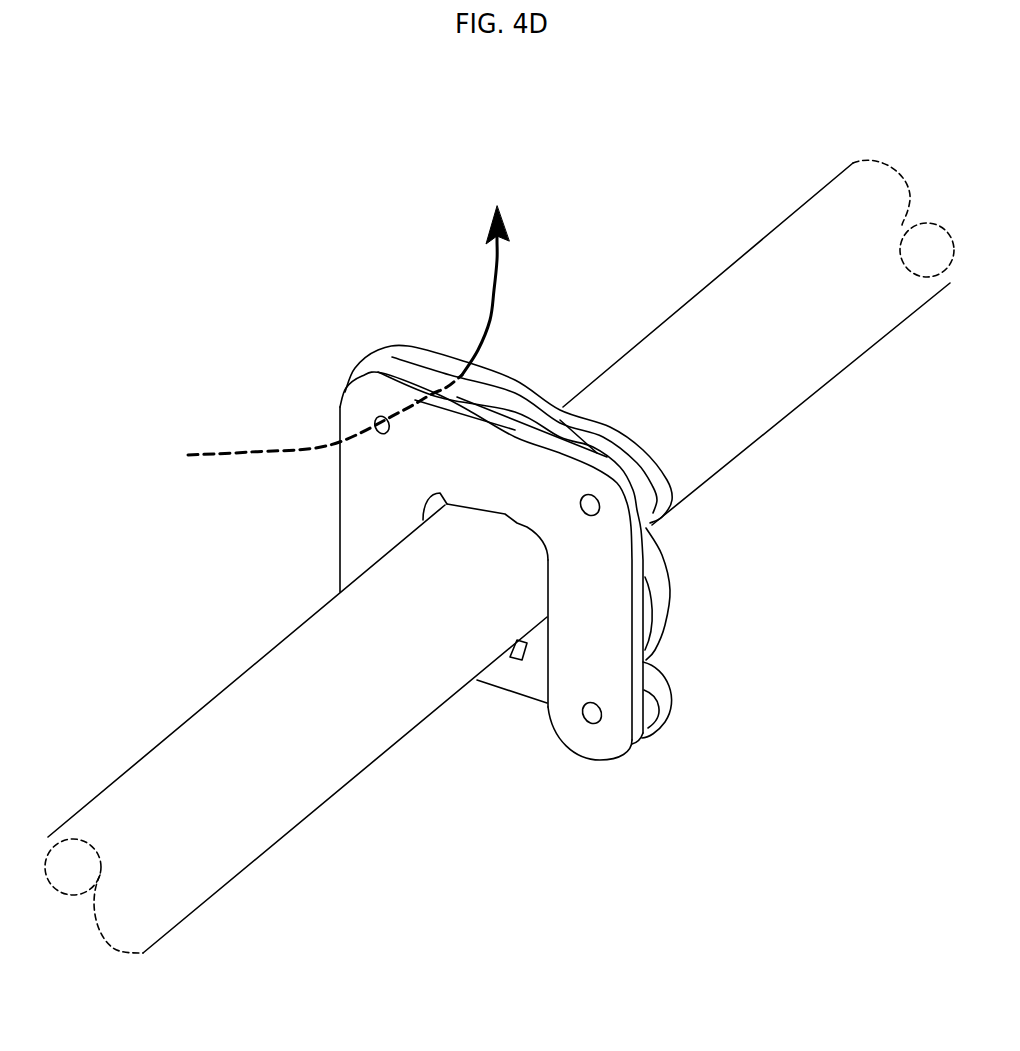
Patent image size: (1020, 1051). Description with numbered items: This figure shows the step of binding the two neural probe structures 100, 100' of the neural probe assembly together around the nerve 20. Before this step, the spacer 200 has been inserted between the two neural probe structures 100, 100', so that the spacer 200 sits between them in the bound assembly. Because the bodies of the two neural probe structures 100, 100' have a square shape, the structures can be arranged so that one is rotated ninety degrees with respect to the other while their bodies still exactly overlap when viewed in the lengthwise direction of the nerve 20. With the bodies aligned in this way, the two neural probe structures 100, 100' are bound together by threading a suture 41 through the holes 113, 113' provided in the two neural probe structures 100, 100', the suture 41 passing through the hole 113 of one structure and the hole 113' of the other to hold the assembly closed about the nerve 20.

The nerve 20 is at (778, 253).
The suture 41 is at (502, 262).
The neural probe structure 100 is at (508, 509).
The neural probe structure 100' is at (432, 566).
The hole 113 is at (423, 302).
The hole 113' is at (314, 398).
The spacer 200 is at (658, 605).